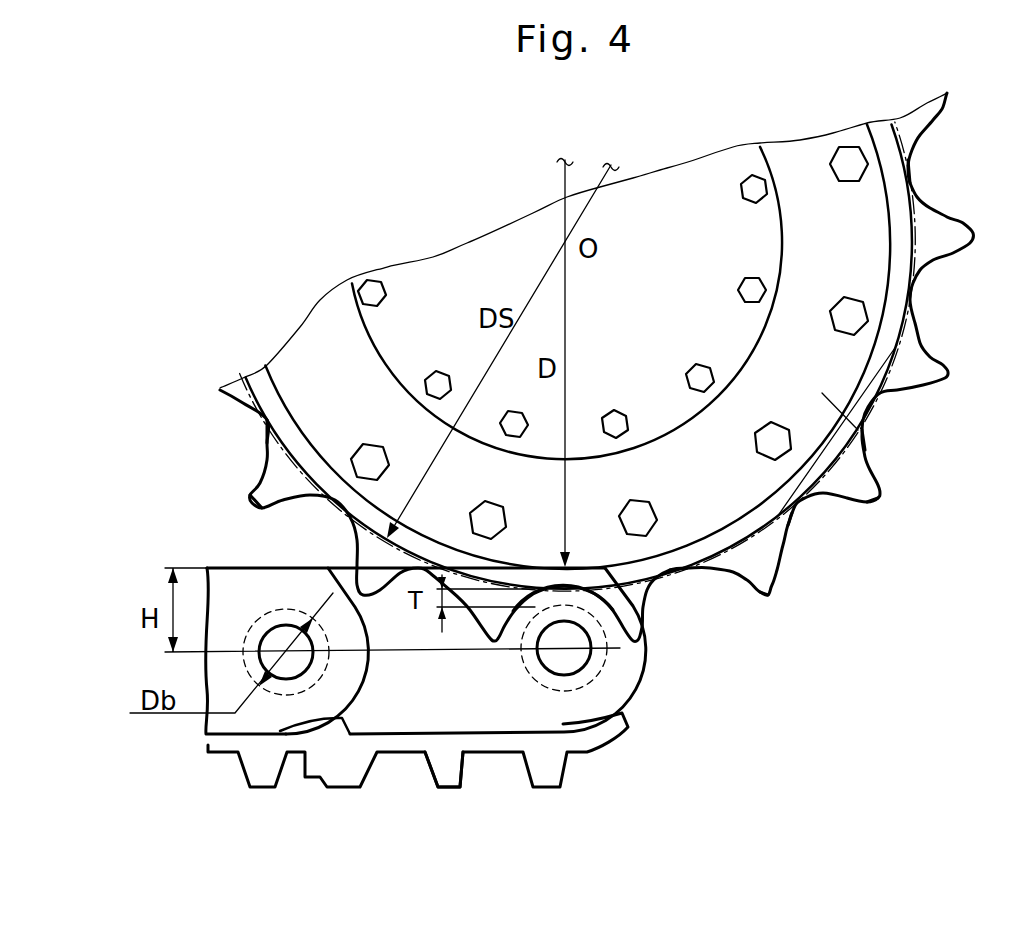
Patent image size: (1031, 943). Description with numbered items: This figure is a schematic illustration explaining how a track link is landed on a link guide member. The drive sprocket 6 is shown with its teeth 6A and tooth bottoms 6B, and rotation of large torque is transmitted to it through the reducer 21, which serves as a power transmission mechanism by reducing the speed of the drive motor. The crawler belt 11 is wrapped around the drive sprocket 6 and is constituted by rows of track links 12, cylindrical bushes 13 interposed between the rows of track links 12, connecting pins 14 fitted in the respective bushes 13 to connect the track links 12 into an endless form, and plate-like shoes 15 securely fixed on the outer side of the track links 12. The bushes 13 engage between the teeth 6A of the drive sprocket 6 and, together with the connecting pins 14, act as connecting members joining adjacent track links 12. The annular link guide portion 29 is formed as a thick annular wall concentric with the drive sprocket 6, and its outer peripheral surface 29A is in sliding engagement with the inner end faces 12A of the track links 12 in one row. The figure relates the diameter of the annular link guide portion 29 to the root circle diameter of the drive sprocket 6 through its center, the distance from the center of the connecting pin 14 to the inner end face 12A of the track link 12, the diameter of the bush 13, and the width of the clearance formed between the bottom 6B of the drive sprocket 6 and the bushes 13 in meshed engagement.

The drive sprocket 6 is at (945, 213).
The teeth of the drive sprocket 6A is at (255, 487).
The bottom of the drive sprocket 6B is at (265, 430).
The crawler belt 11 is at (395, 762).
The track link 12 is at (502, 717).
The inner end face of the track link 12A is at (597, 565).
The cylindrical bush 13 is at (252, 624).
The connecting pin 14 is at (285, 675).
The shoe 15 is at (445, 773).
The reducer 21 is at (680, 213).
The annular link guide portion 29 is at (858, 428).
The outer peripheral surface of the link guide portion 29A is at (880, 323).